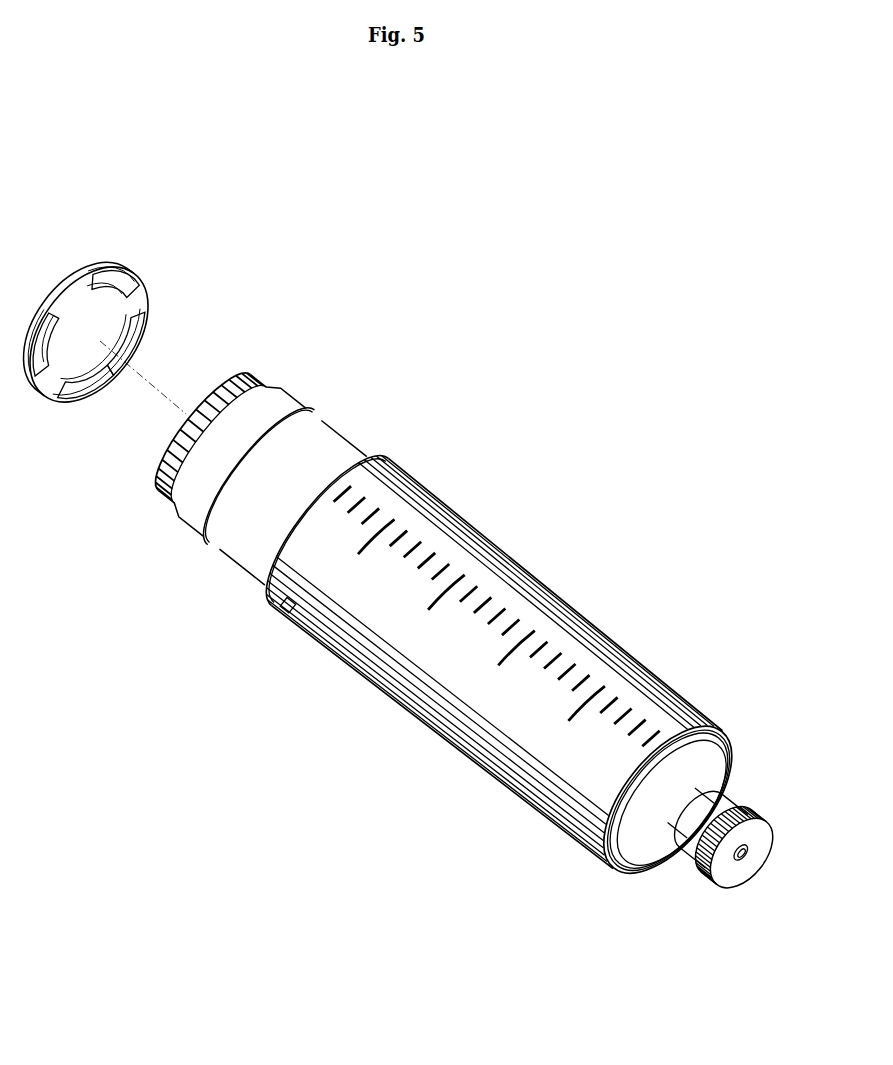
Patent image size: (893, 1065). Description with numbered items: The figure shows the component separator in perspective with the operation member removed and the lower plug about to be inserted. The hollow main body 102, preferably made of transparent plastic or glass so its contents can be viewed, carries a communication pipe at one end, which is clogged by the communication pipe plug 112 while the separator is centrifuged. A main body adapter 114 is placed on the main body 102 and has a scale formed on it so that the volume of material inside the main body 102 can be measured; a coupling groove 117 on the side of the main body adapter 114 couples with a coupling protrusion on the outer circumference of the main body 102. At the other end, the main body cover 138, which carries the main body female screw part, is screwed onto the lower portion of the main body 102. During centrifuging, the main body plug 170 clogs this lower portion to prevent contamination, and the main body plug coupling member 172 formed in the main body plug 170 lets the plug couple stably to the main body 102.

The main body 102 is at (712, 745).
The communication pipe plug 112 is at (712, 873).
The main body adapter 114 is at (588, 609).
The coupling groove 117 is at (290, 604).
The main body cover 138 is at (188, 518).
The main body plug 170 is at (112, 268).
The main body plug coupling member 172 is at (127, 290).